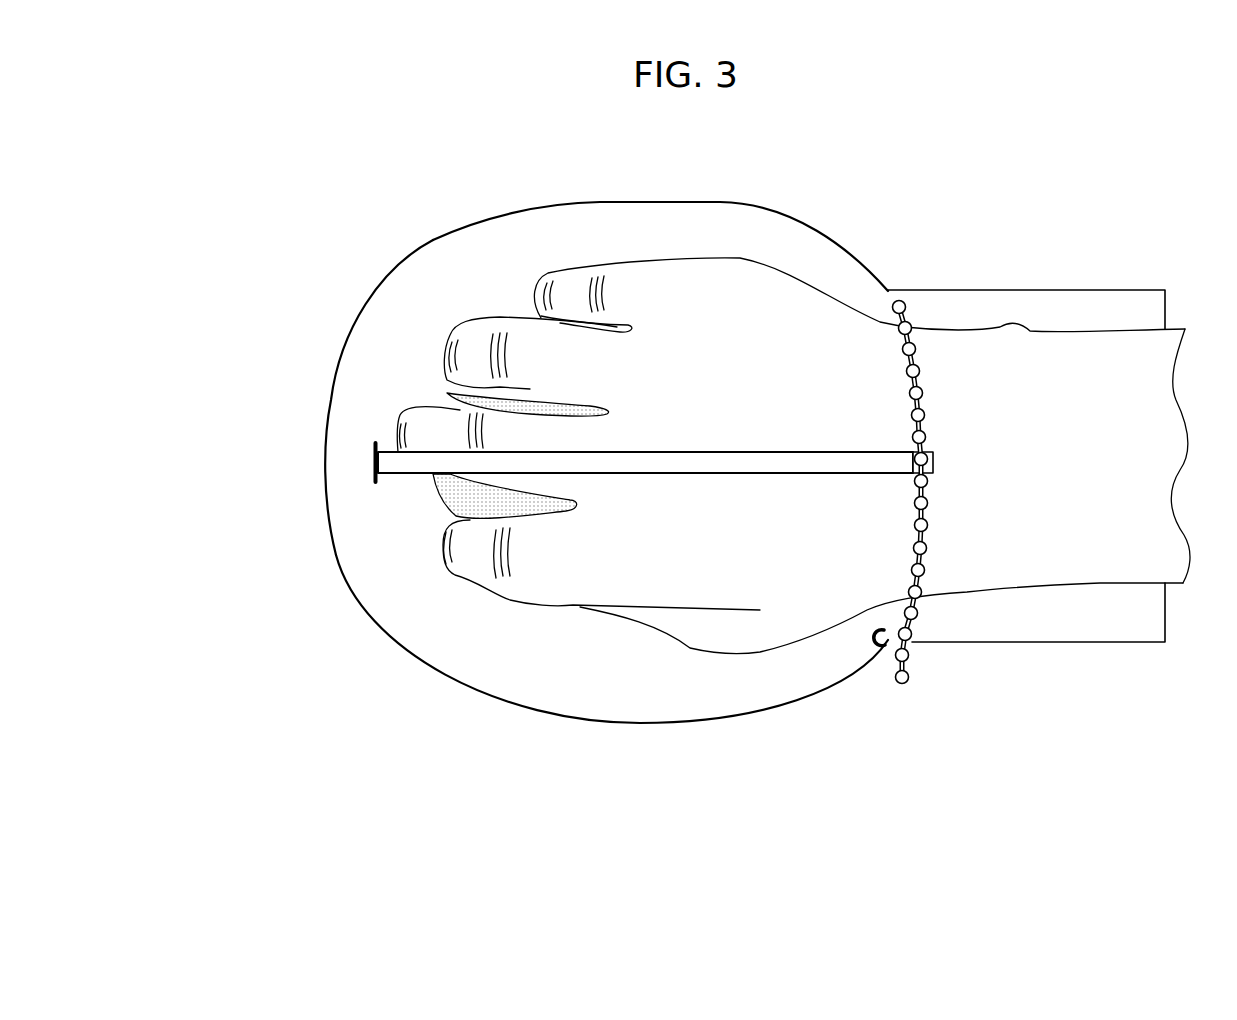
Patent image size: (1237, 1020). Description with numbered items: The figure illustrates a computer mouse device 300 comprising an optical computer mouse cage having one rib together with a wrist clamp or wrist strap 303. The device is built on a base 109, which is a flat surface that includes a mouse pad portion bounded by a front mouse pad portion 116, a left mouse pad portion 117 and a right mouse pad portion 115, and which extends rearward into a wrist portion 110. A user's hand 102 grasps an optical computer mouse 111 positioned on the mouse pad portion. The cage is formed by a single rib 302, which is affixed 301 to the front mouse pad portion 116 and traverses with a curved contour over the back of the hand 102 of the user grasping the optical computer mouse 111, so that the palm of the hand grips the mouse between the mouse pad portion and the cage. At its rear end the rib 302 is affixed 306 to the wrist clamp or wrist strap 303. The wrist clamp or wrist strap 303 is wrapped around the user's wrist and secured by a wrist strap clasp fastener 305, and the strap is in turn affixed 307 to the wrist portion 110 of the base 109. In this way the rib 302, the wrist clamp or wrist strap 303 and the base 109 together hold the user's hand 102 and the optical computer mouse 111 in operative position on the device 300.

The computer mouse device 300 is at (416, 199).
The right mouse pad portion 115 is at (777, 206).
The hand 102 is at (812, 357).
The affixment of wrist strap to wrist portion 307 is at (899, 298).
The wrist portion 110 is at (1043, 316).
The front mouse pad portion 116 is at (330, 406).
The affixment of rib to front mouse pad portion 301 is at (372, 457).
The base 109 is at (348, 490).
The optical computer mouse 111 is at (447, 504).
The rib 302 is at (687, 456).
The affixment of rib to wrist strap 306 is at (934, 462).
The wrist clamp or wrist strap 303 is at (935, 527).
The wrist strap clasp fastener 305 is at (883, 642).
The left mouse pad portion 117 is at (410, 657).